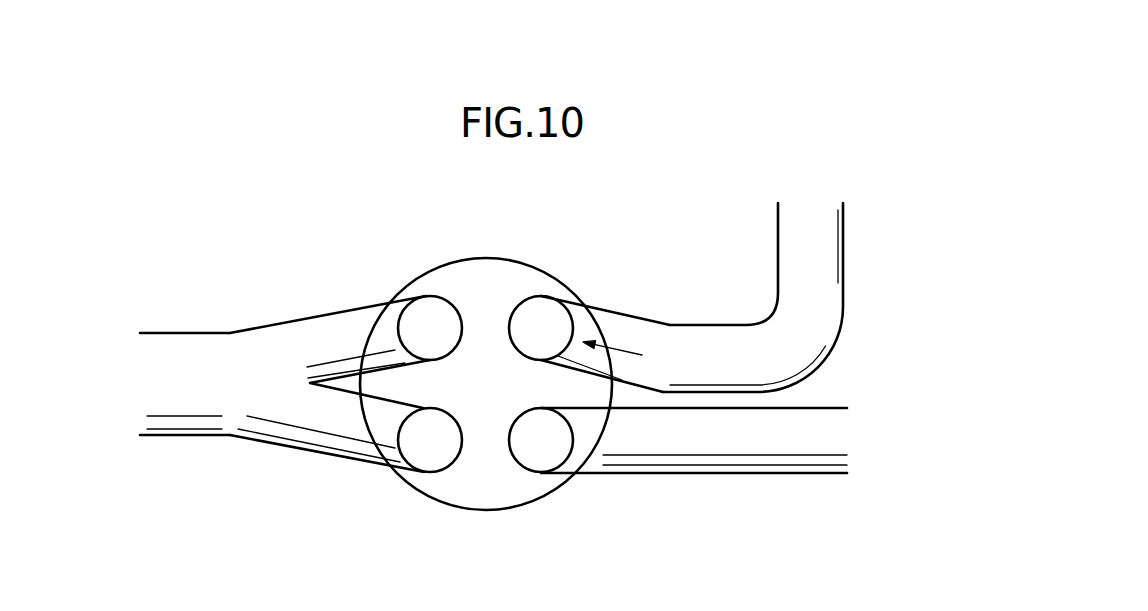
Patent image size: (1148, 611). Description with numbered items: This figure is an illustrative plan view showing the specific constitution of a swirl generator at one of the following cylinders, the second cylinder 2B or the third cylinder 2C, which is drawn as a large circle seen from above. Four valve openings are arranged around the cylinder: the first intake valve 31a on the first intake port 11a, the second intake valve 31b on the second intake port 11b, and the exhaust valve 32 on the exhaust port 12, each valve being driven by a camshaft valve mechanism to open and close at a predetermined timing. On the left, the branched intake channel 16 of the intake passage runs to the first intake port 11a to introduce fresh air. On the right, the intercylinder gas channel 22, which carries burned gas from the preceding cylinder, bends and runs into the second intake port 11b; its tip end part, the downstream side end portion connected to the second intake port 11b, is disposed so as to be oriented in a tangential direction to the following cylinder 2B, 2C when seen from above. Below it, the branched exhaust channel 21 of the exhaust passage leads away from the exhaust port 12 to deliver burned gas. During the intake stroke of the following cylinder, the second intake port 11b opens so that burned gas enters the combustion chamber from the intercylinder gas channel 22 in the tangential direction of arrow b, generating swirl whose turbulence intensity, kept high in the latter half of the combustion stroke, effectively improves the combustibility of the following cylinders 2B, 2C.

The second cylinder 2B is at (486, 351).
The third cylinder 2C is at (476, 268).
The first intake valve 31a is at (428, 305).
The second intake valve 31b is at (532, 310).
The exhaust valve 32 is at (528, 460).
The branched intake channel 16 is at (285, 387).
The first intake port 11a is at (357, 320).
The second intake port 11b is at (582, 303).
The intercylinder gas channel 22 is at (692, 297).
The branched exhaust channel 21 is at (694, 468).
The exhaust port 12 is at (573, 473).
The arrow b is at (623, 353).